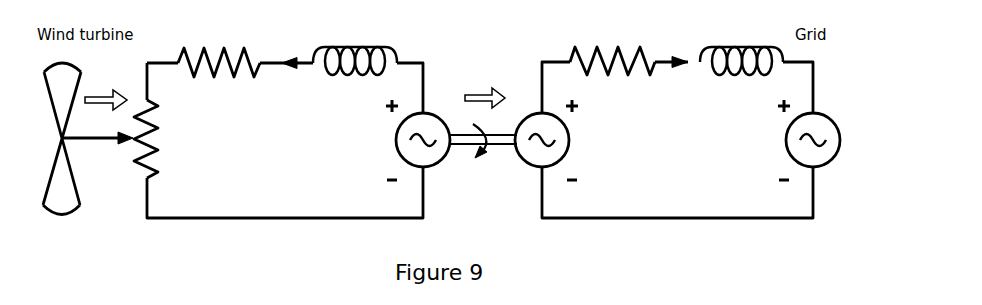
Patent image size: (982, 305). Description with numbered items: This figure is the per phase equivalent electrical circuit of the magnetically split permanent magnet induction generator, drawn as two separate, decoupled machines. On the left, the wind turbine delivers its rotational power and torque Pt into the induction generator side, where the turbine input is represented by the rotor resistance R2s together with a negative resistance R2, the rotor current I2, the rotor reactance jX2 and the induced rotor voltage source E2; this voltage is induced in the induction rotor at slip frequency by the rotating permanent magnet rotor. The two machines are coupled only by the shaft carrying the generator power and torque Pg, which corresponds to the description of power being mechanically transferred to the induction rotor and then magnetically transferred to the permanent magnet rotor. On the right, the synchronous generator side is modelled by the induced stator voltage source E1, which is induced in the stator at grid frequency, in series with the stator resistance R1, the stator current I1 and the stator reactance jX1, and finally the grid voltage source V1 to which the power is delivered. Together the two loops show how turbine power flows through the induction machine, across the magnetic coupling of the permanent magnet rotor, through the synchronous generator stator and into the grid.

The wind turbine power/torque (Pt, Tt) Pt is at (88, 139).
The rotor resistance R2(1+s)/s R2s is at (268, 146).
The negative rotor resistance - R2 is at (219, 45).
The rotor current I2 is at (294, 82).
The rotor reactance jX2 is at (355, 44).
The rotor voltage source E2 is at (403, 140).
The generator shaft power/torque (Pg, Tg) Pg is at (483, 144).
The stator voltage source E1 is at (561, 140).
The stator resistance R1 is at (612, 45).
The stator current I1 is at (681, 83).
The stator reactance jX1 is at (741, 45).
The grid voltage source V1 is at (796, 140).